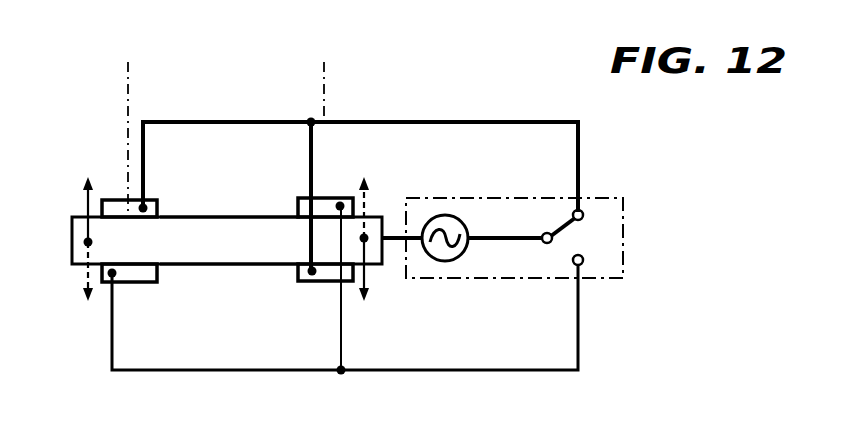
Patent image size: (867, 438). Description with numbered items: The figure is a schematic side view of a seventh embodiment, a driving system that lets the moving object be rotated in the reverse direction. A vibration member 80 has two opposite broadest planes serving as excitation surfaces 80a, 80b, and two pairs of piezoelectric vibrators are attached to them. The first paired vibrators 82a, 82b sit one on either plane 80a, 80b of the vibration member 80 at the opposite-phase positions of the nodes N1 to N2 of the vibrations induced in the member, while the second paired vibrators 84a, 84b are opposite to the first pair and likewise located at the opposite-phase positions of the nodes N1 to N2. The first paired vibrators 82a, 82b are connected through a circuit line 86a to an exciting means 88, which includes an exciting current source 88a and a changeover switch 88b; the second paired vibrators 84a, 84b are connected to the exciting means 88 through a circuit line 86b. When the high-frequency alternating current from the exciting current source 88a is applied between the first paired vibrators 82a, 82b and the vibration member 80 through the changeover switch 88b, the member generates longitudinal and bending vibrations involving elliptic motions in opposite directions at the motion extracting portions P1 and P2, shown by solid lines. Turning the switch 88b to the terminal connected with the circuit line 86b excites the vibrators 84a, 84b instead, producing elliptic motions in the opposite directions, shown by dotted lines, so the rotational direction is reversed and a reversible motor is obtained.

The vibration member 80 is at (227, 264).
The excitation surface 80a is at (182, 217).
The excitation surface 80b is at (187, 264).
The first paired vibrator 82a is at (117, 207).
The first paired vibrator 82b is at (312, 281).
The second paired vibrator 84a is at (307, 207).
The second paired vibrator 84b is at (103, 285).
The circuit line 86a is at (393, 122).
The circuit line 86b is at (448, 370).
The exciting means 88 is at (623, 216).
The exciting current source 88a is at (455, 222).
The changeover switch 88b is at (562, 250).
The node N1 is at (122, 122).
The node N2 is at (320, 74).
The motion extracting portion P1 is at (88, 242).
The motion extracting portion P2 is at (364, 238).